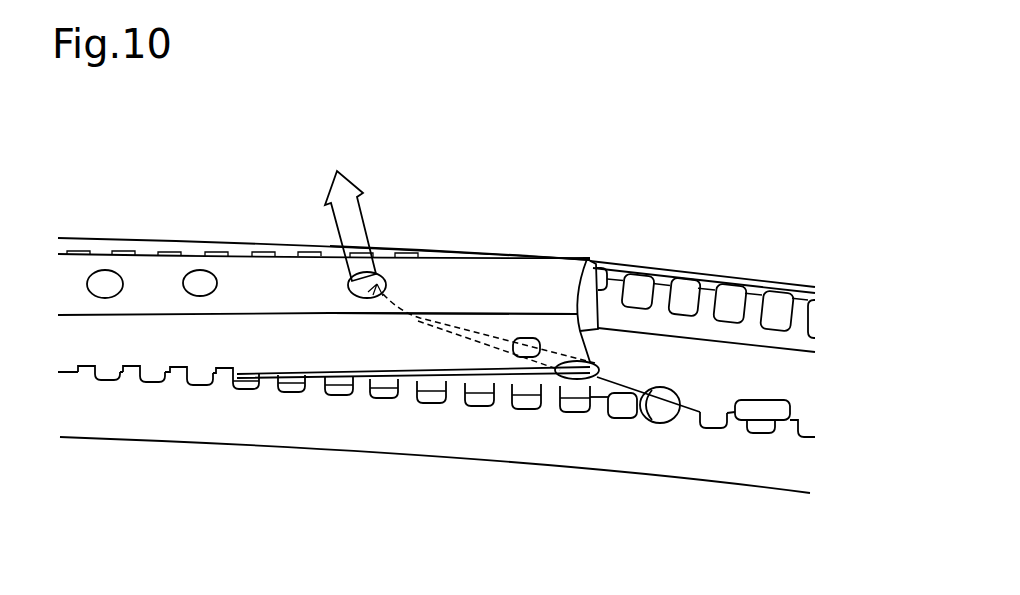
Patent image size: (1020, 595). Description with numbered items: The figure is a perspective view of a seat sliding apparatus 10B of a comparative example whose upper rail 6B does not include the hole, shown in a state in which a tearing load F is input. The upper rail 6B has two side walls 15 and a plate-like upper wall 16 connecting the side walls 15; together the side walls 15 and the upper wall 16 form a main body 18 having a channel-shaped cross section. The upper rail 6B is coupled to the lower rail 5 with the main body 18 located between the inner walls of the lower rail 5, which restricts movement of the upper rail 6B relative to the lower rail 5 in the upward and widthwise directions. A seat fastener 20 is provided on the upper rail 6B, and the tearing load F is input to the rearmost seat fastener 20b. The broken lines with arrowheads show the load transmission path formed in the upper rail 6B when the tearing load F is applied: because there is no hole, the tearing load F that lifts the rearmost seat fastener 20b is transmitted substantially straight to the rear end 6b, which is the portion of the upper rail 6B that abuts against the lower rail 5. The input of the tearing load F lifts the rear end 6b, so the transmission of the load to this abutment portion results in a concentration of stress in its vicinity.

The seat sliding apparatus 10B is at (742, 110).
The upper wall 16 is at (137, 272).
The upper rail 6B is at (560, 257).
The main body 18 is at (490, 294).
The rear end 6b is at (590, 258).
The seat fastener 20 is at (378, 266).
The rearmost seat fastener 20b is at (489, 332).
The lower rail 5 is at (767, 277).
The side wall 15 is at (207, 353).
The tearing load F is at (360, 224).